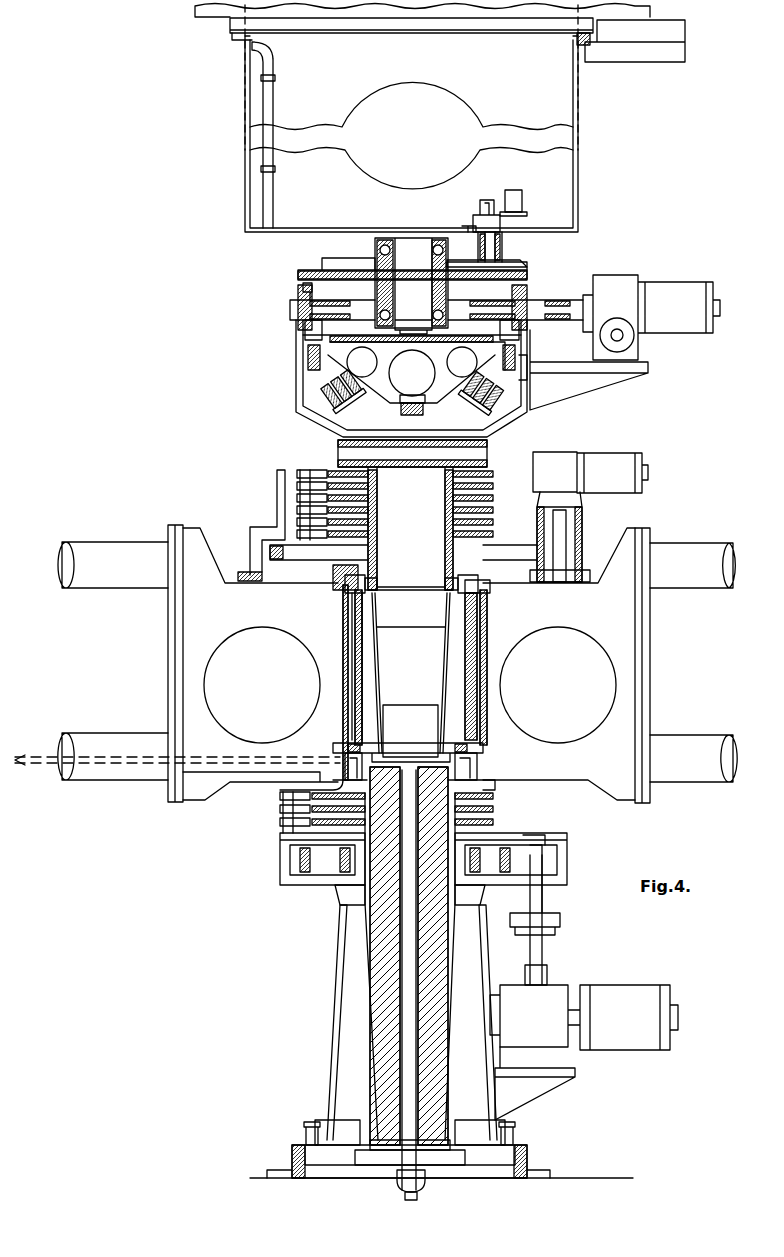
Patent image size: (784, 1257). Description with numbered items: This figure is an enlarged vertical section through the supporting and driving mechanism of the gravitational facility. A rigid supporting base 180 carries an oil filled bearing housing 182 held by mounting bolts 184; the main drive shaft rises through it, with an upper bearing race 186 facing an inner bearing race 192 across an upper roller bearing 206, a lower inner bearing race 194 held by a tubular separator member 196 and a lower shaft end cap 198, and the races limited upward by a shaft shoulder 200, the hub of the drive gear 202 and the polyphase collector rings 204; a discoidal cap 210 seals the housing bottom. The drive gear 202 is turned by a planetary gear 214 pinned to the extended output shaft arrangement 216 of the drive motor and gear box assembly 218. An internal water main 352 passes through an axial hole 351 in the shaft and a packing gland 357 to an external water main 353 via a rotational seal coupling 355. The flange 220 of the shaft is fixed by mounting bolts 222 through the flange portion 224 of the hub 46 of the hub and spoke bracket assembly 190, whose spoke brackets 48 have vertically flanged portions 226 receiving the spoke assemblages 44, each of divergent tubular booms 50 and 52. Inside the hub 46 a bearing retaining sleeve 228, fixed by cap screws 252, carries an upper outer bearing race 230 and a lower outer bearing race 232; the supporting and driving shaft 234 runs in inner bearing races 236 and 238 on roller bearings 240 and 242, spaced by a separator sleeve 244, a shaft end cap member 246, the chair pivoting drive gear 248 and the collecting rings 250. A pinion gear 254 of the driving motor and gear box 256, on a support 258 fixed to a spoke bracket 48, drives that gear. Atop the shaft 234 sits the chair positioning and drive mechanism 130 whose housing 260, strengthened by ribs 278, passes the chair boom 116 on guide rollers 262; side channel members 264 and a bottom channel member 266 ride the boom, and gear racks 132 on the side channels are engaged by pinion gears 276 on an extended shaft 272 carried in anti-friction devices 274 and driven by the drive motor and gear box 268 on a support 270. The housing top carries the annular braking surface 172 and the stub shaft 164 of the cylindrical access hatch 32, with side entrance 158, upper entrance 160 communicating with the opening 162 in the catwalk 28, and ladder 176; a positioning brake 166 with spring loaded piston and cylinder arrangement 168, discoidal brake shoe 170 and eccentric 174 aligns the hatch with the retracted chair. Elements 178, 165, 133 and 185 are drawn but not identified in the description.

The catwalk 28 is at (194, 12).
The opening 162 is at (232, 18).
The entrance 160 is at (447, 30).
The support block 178 is at (665, 58).
The access hatch 32 is at (580, 105).
The entrance 158 is at (458, 100).
The ladder 176 is at (274, 78).
The eccentric 174 is at (487, 200).
The positioning brake 166 is at (523, 194).
The spring loaded piston and cylinder arrangement 168 is at (496, 243).
The discoidal brake shoe 170 is at (528, 263).
The fitting 165 is at (462, 228).
The annular braking surface 172 is at (340, 258).
The chair positioning and drive mechanism 130 is at (528, 276).
The stub shaft 164 is at (399, 288).
The extended shaft 272 is at (462, 300).
The pinion gears 276 is at (303, 285).
The anti-friction devices 274 is at (298, 295).
The chair boom 116 is at (330, 412).
The gear racks 132 is at (303, 334).
The guide rollers 262 is at (308, 356).
The side channel members 264 is at (322, 378).
The bottom channel member 266 is at (400, 413).
The ribs 278 is at (505, 400).
The housing 260 is at (528, 345).
The plate 133 is at (487, 450).
The drive motor and gear box 268 is at (662, 290).
The support 270 is at (632, 385).
The driving motor and gear box 256 is at (552, 458).
The support 258 is at (582, 515).
The pinion gear 254 is at (575, 585).
The supporting and driving shaft 234 is at (396, 526).
The collecting rings 250 is at (503, 522).
The chair pivoting drive gear 248 is at (297, 560).
The cap screws 252 is at (345, 570).
The spoke brackets 48 is at (198, 616).
The hub and spoke bracket assembly 190 is at (594, 800).
The vertically flanged portions 226 is at (650, 665).
The spoke assemblages 44 is at (70, 676).
The tubular boom 52 is at (112, 580).
The tubular boom 50 is at (126, 773).
The flange 220 is at (343, 765).
The roller bearing 242 is at (355, 745).
The hub 46 is at (487, 624).
The upper outer bearing race 230 is at (480, 593).
The inner bearing race 236 is at (445, 580).
The roller bearing 240 is at (370, 585).
The bearing retaining sleeve 228 is at (445, 650).
The separator sleeve 244 is at (380, 675).
The shaft end cap member 246 is at (392, 757).
The inner bearing race 238 is at (450, 747).
The lower outer bearing race 232 is at (470, 748).
The mounting bolts 222 is at (477, 762).
The flange portion 224 is at (477, 772).
The internal water main 352 is at (408, 958).
The axial hole 351 is at (405, 1062).
The tubular separator member 196 is at (366, 1000).
The shaft shoulder 200 is at (494, 790).
The polyphase collector rings 204 is at (493, 820).
The drive gear 202 is at (290, 870).
The planetary gear 214 is at (548, 855).
The extended output shaft arrangement 216 is at (543, 945).
The drive motor and gear box assembly 218 is at (555, 985).
The inner bearing race 192 is at (345, 935).
The upper bearing race 186 is at (345, 900).
The upper roller bearing 206 is at (352, 915).
The leg 185 is at (333, 1022).
The bearing housing 182 is at (274, 1058).
The supporting base 180 is at (527, 1152).
The mounting bolts 184 is at (304, 1124).
The discoidal cap 210 is at (358, 1164).
The packing gland 357 is at (440, 1160).
The inner bearing race 194 is at (380, 1150).
The lower shaft end cap 198 is at (400, 1150).
The rotational seal coupling 355 is at (430, 1182).
The external water main 353 is at (418, 1196).